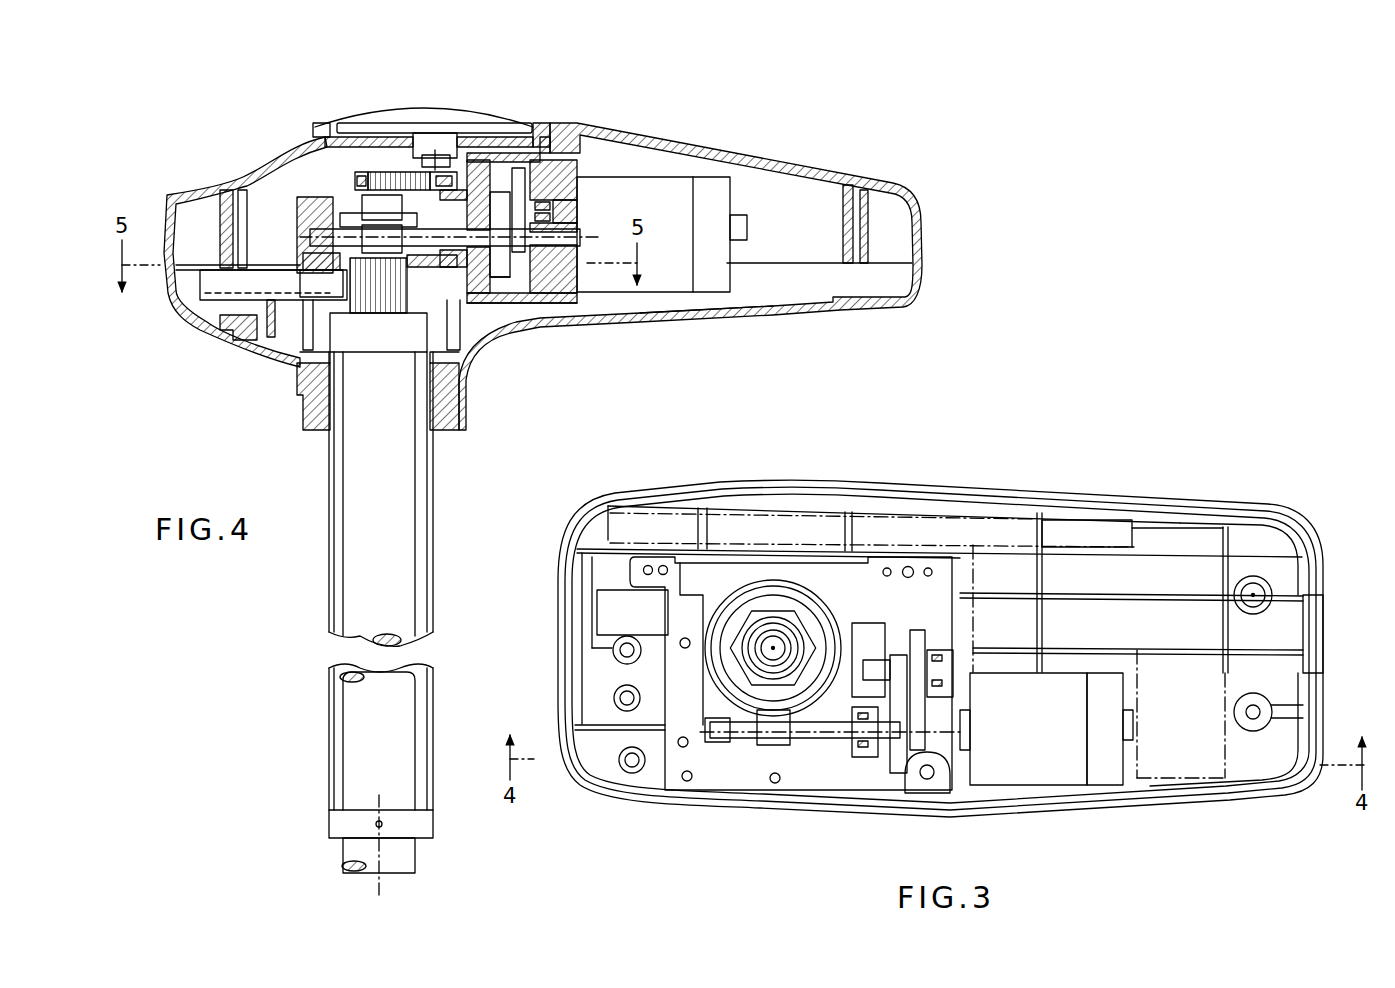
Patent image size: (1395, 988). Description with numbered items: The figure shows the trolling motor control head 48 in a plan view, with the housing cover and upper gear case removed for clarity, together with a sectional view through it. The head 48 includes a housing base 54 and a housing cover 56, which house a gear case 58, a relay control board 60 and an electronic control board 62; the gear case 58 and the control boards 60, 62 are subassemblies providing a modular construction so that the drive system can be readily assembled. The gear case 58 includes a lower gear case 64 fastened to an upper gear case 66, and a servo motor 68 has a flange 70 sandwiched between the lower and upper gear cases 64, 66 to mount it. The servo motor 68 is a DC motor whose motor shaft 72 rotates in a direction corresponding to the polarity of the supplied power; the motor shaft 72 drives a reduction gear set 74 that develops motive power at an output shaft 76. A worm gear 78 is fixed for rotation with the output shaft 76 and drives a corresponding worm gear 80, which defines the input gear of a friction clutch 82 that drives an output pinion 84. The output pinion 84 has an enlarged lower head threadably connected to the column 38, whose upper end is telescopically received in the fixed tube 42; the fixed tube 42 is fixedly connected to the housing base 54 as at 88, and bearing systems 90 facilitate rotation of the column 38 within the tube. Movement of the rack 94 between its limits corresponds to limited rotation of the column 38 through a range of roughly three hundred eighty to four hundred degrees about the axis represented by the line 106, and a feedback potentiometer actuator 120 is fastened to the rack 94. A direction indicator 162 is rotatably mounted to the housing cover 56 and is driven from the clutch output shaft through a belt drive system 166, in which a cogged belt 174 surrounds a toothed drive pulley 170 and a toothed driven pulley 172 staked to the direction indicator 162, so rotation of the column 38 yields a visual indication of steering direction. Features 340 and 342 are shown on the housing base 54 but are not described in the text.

In FIG. 4, the column 38 is at (430, 855).
In FIG. 4, the fixed tube 42 is at (433, 555).
In FIG. 4, the head 48 is at (737, 143).
In FIG. 4, the housing base 54 is at (765, 318).
In FIG. 3, the housing base 54 is at (1247, 793).
In FIG. 4, the housing cover 56 is at (808, 165).
In FIG. 3, the gear case 58 is at (688, 795).
In FIG. 4, the relay control board 60 is at (780, 270).
In FIG. 3, the relay control board 60 is at (1150, 562).
In FIG. 3, the electronic control board 62 is at (950, 535).
In FIG. 4, the lower gear case 64 is at (550, 300).
In FIG. 3, the lower gear case 64 is at (795, 785).
In FIG. 4, the upper gear case 66 is at (563, 168).
In FIG. 4, the servo motor 68 is at (662, 280).
In FIG. 3, the servo motor 68 is at (1058, 770).
In FIG. 4, the flange 70 is at (578, 203).
In FIG. 3, the flange 70 is at (972, 690).
In FIG. 4, the motor shaft 72 is at (555, 240).
In FIG. 3, the motor shaft 72 is at (938, 732).
In FIG. 4, the reduction gear set 74 is at (519, 262).
In FIG. 3, the reduction gear set 74 is at (883, 767).
In FIG. 4, the output shaft 76 is at (483, 160).
In FIG. 3, the output shaft 76 is at (822, 730).
In FIG. 4, the worm gear 78 is at (378, 325).
In FIG. 3, the worm gear 78 is at (763, 757).
In FIG. 4, the worm gear 80 is at (393, 350).
In FIG. 3, the worm gear 80 is at (742, 590).
In FIG. 4, the friction clutch 82 is at (345, 178).
In FIG. 3, the friction clutch 82 is at (800, 618).
In FIG. 4, the output pinion 84 is at (478, 330).
In FIG. 4, the connection of fixed tube to housing base 88 is at (325, 385).
In FIG. 4, the bearing systems 90 is at (455, 385).
In FIG. 4, the rack 94 is at (275, 280).
In FIG. 4, the line 106 is at (385, 880).
In FIG. 4, the feedback potentiometer actuator 120 is at (322, 282).
In FIG. 4, the direction indicator 162 is at (432, 113).
In FIG. 4, the belt drive system 166 is at (378, 165).
In FIG. 4, the drive pulley 170 is at (385, 172).
In FIG. 4, the driven pulley 172 is at (456, 162).
In FIG. 4, the cogged belt 174 is at (290, 195).
In FIG. 3, the boss 340 is at (1253, 575).
In FIG. 3, the boss hole 342 is at (1262, 592).